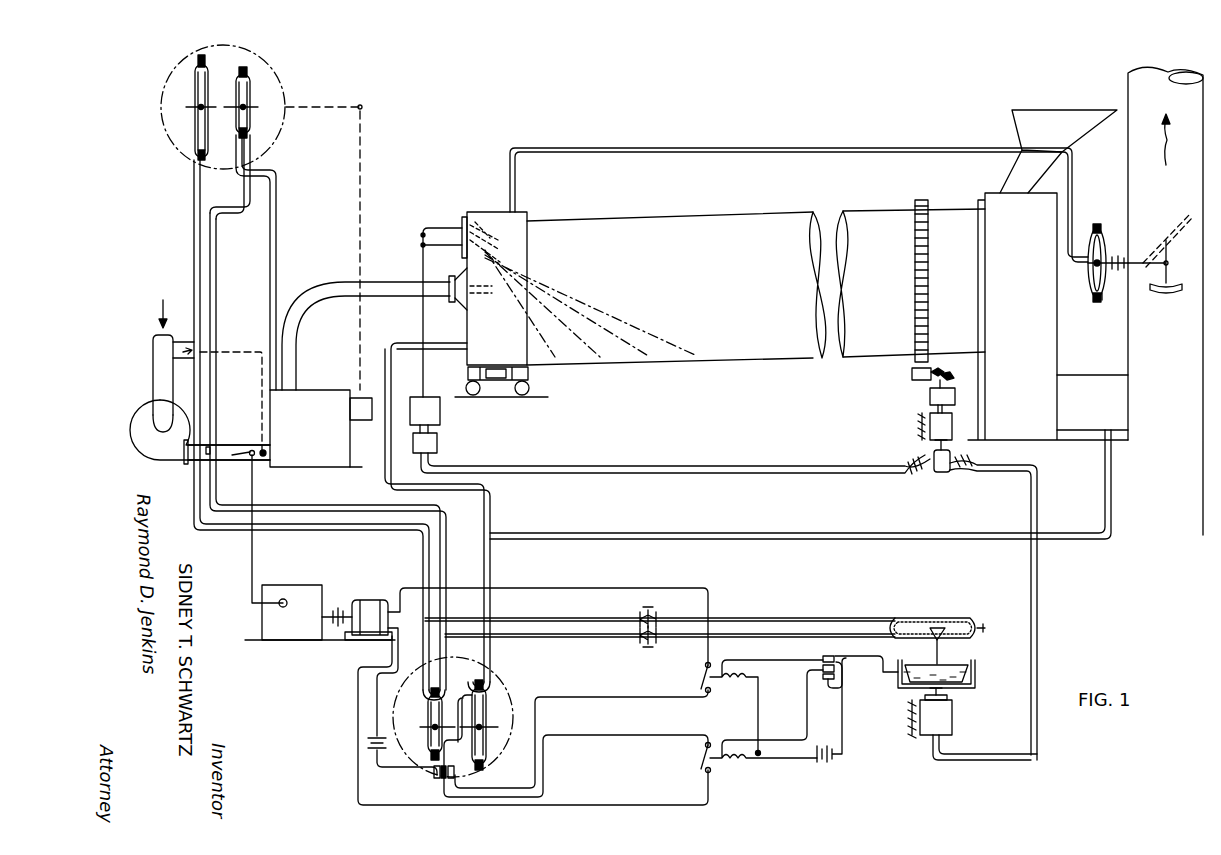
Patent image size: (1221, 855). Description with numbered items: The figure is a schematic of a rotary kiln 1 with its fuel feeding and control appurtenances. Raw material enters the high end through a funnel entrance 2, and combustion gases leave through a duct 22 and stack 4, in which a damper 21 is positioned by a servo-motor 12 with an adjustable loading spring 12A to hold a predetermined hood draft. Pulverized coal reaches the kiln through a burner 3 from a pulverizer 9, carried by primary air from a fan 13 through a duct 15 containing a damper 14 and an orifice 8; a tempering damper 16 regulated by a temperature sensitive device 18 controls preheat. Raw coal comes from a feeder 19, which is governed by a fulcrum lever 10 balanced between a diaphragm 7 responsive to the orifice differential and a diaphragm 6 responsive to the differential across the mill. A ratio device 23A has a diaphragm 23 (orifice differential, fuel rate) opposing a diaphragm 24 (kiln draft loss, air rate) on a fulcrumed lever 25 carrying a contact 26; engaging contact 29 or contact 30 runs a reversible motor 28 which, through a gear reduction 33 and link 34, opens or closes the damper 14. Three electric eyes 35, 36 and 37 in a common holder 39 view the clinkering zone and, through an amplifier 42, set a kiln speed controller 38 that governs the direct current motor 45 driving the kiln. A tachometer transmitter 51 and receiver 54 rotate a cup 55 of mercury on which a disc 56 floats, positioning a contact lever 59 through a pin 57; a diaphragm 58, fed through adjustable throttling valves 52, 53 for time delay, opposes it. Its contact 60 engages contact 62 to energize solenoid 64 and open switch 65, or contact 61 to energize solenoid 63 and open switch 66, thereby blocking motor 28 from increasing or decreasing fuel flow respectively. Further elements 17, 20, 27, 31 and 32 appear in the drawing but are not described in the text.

The rotary kiln 1 is at (712, 218).
The funnel entrance 2 is at (1010, 122).
The burner 3 is at (458, 280).
The stack 4 is at (1128, 88).
The pressure sensitive diaphragm 6 is at (251, 98).
The pressure sensitive diaphragm 7 is at (197, 92).
The orifice 8 is at (213, 460).
The pulverizer 9 is at (313, 390).
The fulcrum lever 10 is at (238, 78).
The servo-motor 12 is at (1099, 232).
The adjustable loading spring 12A is at (1105, 296).
The fan 13 is at (138, 412).
The damper 14 is at (232, 445).
The duct 15 is at (252, 450).
The tempering damper 16 is at (188, 346).
The connecting pipe 17 is at (178, 357).
The temperature sensitive device 18 is at (264, 460).
The feeder 19 is at (360, 420).
The inlet pipe 20 is at (153, 343).
The damper 21 is at (1172, 238).
The duct 22 is at (1105, 375).
The diaphragm 23 is at (428, 713).
The ratio control device 23A is at (498, 676).
The diaphragm 24 is at (483, 706).
The fulcrumed lever 25 is at (470, 744).
The contact 26 is at (432, 786).
The conductor 27 is at (372, 700).
The reversible motor 28 is at (368, 600).
The contact 29 is at (434, 772).
The contact 30 is at (456, 773).
The conductor 31 is at (585, 735).
The conductor 32 is at (576, 697).
The gear reduction 33 is at (292, 585).
The link 34 is at (250, 549).
The photo cell 35 is at (488, 232).
The photo cell 36 is at (494, 248).
The photo cell 37 is at (496, 264).
The kiln speed controller 38 is at (437, 444).
The common holder 39 is at (462, 222).
The amplifier 42 is at (440, 408).
The direct current motor 45 is at (950, 432).
The transmitter 51 is at (932, 472).
The adjustable throttling valve 52 is at (642, 616).
The adjustable throttling valve 53 is at (640, 637).
The receiver 54 is at (952, 716).
The cup 55 is at (975, 684).
The disc 56 is at (966, 672).
The pin 57 is at (942, 656).
The diaphragm 58 is at (927, 622).
The contact lever 59 is at (866, 660).
The contact 60 is at (823, 668).
The contact 61 is at (823, 658).
The contact 62 is at (828, 680).
The solenoid 63 is at (730, 680).
The solenoid 64 is at (730, 762).
The switch 65 is at (700, 757).
The switch 66 is at (700, 677).